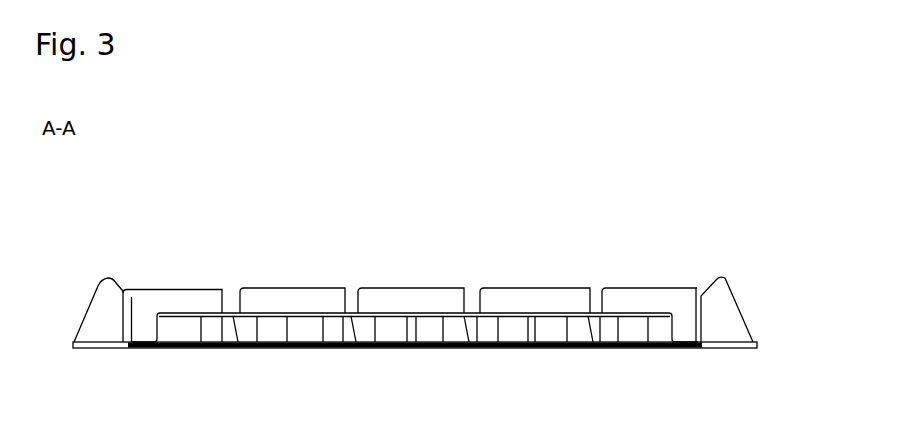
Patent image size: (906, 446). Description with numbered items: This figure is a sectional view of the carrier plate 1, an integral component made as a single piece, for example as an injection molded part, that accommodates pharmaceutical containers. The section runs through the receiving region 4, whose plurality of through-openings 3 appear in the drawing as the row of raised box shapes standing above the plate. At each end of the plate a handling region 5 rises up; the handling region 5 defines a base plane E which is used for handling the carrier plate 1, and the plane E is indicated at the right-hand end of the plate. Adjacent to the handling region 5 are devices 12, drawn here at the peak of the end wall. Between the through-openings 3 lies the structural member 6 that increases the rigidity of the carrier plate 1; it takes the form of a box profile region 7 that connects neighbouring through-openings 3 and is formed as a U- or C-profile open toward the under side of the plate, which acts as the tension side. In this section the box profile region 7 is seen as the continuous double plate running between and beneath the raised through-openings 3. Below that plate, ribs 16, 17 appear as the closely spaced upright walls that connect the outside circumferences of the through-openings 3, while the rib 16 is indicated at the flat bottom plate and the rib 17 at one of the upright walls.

The carrier plate 1 is at (452, 216).
The through-openings 3 is at (172, 276).
The receiving region 4 is at (531, 281).
The handling region 5 is at (95, 323).
The structural member 6 is at (223, 313).
The box profile region 7 is at (415, 261).
The devices 12 is at (112, 291).
The rib 16 is at (206, 356).
The rib 17 is at (252, 327).
The base plane E is at (753, 342).